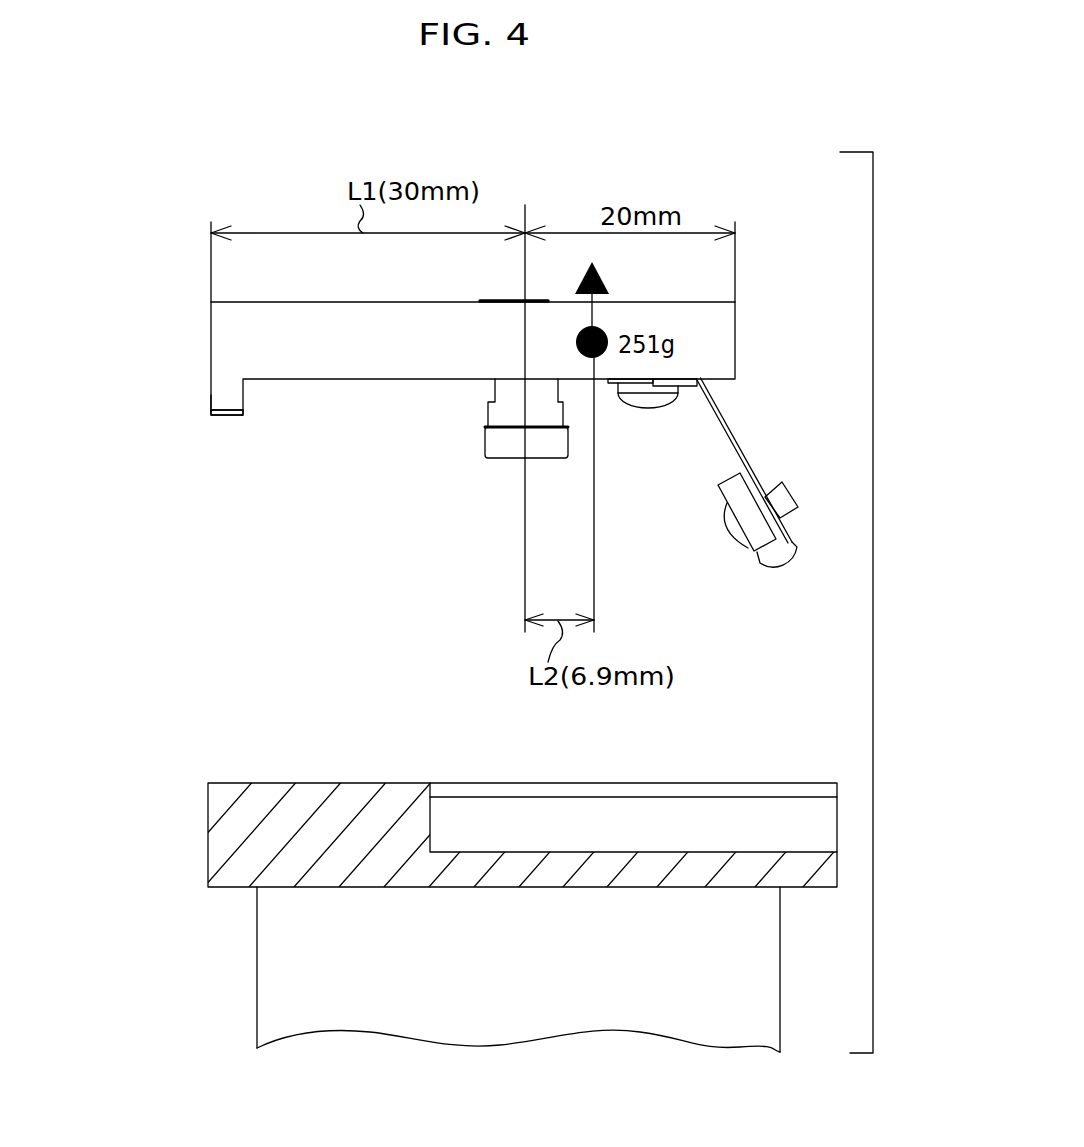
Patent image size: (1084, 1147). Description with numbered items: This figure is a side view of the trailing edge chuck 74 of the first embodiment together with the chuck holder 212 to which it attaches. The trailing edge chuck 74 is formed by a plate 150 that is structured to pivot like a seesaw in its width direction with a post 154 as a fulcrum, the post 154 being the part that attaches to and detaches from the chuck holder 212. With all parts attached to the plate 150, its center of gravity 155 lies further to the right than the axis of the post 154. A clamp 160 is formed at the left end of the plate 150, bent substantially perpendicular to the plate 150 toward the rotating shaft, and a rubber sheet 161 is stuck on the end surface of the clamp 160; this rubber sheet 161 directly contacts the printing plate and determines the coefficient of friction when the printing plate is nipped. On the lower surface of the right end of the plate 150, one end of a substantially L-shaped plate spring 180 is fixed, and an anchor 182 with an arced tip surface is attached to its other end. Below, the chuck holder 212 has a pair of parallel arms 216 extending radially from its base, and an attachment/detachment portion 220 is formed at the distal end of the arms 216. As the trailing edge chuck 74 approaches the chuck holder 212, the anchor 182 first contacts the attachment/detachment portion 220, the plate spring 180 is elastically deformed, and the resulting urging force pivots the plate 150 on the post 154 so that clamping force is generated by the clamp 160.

The trailing edge chuck 74 is at (464, 298).
The plate 150 is at (363, 366).
The post 154 is at (482, 425).
The center of gravity 155 is at (597, 380).
The clamp 160 is at (220, 403).
The rubber sheet 161 is at (235, 418).
The plate spring 180 is at (735, 441).
The anchor 182 is at (768, 552).
The chuck holder 212 is at (482, 805).
The arm 216 is at (268, 968).
The attachment/detachment portion 220 is at (205, 851).